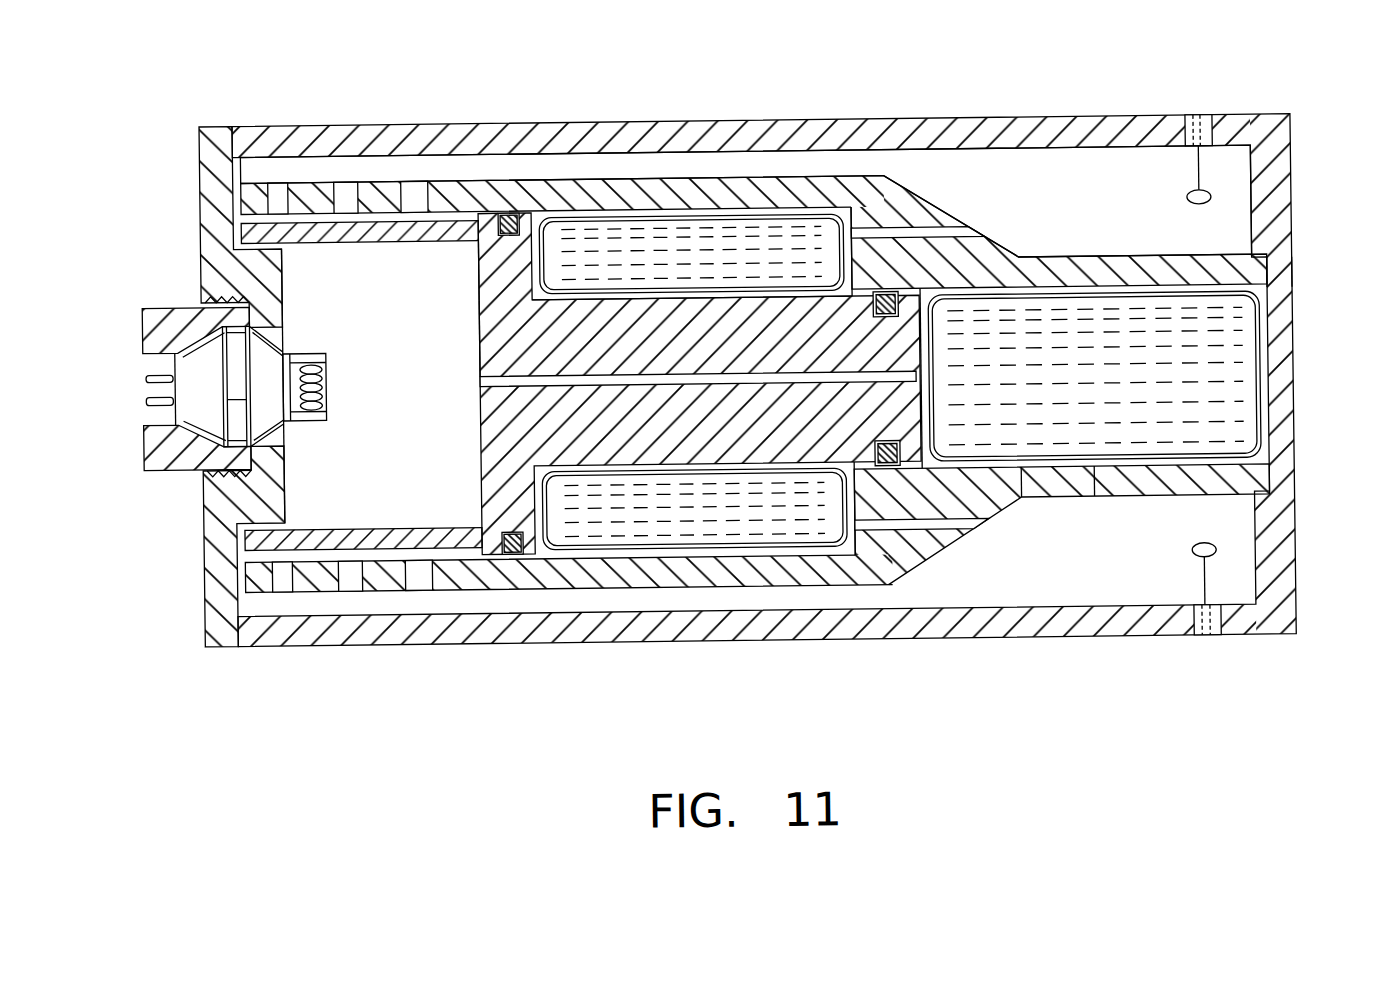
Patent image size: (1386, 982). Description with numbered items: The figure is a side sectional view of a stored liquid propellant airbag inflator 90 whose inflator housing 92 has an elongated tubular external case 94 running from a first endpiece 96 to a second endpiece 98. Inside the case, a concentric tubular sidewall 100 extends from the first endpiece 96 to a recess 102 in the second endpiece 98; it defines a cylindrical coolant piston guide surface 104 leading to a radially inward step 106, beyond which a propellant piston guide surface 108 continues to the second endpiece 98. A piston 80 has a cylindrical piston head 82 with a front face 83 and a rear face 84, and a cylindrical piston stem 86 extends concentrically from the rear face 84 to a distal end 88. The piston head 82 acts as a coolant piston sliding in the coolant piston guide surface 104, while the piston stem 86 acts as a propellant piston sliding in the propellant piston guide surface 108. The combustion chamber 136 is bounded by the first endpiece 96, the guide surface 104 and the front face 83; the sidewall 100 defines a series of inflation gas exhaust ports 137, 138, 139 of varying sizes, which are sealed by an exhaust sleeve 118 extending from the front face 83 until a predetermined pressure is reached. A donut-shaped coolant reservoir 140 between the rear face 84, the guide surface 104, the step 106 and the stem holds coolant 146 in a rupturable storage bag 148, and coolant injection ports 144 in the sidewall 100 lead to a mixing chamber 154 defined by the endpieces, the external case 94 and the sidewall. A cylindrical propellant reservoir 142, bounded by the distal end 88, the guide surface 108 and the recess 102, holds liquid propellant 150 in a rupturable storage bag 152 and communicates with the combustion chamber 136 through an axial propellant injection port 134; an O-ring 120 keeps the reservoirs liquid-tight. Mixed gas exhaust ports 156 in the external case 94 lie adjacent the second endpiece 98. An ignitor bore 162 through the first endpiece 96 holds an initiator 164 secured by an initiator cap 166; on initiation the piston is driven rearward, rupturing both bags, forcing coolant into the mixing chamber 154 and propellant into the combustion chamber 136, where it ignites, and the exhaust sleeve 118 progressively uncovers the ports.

The airbag inflator 90 is at (666, 45).
The inflator housing 92 is at (1299, 165).
The external case 94 is at (1128, 650).
The first endpiece 96 is at (198, 597).
The second endpiece 98 is at (1291, 602).
The sidewall 100 is at (1103, 260).
The recess 102 is at (1296, 294).
The coolant piston guide surface 104 is at (253, 560).
The step 106 is at (823, 563).
The propellant piston guide surface 108 is at (1086, 466).
The exhaust sleeve 118 is at (311, 248).
The O-ring 120 is at (499, 541).
The propellant injection port 134 is at (497, 382).
The combustion chamber 136 is at (340, 385).
The inflation gas exhaust port 137 is at (272, 186).
The inflation gas exhaust port 138 is at (349, 187).
The inflation gas exhaust port 139 is at (414, 187).
The coolant reservoir 140 is at (806, 218).
The propellant reservoir 142 is at (1274, 256).
The coolant injection ports 144 is at (917, 244).
The coolant 146 is at (756, 382).
The rupturable storage bag 148 is at (712, 223).
The liquid propellant 150 is at (1014, 377).
The rupturable storage bag 152 is at (1252, 406).
The mixing chamber 154 is at (745, 205).
The mixed gas exhaust ports 156 is at (1187, 206).
The ignitor bore 162 is at (147, 425).
The initiator 164 is at (169, 372).
The initiator cap 166 is at (140, 317).
The piston 80 is at (604, 330).
The piston head 82 is at (479, 211).
The front face 83 is at (475, 293).
The rear face 84 is at (475, 326).
The piston stem 86 is at (635, 307).
The distal end 88 is at (917, 410).